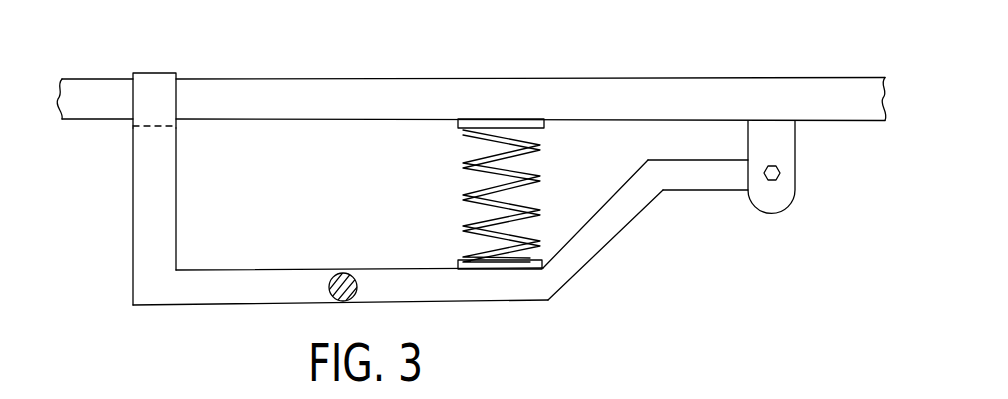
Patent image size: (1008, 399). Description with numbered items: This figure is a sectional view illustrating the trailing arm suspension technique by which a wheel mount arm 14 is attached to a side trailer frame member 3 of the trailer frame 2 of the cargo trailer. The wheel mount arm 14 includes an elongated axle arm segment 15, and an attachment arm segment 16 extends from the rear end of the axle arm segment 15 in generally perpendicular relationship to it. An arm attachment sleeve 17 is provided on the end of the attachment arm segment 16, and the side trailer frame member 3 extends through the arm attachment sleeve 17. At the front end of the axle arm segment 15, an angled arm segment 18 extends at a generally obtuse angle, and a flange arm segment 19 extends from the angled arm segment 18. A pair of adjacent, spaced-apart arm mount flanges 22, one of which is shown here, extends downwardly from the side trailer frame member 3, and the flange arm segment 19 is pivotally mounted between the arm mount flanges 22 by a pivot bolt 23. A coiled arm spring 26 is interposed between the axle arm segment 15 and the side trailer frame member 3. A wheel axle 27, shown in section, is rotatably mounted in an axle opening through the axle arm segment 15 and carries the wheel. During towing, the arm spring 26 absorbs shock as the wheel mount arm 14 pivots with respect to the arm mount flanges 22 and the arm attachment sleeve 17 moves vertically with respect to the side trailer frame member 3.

The trailer frame 2 is at (643, 78).
The side trailer frame member 3 is at (373, 97).
The wheel mount arm 14 is at (512, 302).
The axle arm segment 15 is at (203, 285).
The attachment arm segment 16 is at (157, 172).
The arm attachment sleeve 17 is at (158, 92).
The angled arm segment 18 is at (600, 228).
The flange arm segment 19 is at (695, 180).
The arm mount flange 22 is at (782, 147).
The pivot bolt 23 is at (781, 171).
The coiled arm spring 26 is at (541, 150).
The wheel axle 27 is at (354, 270).